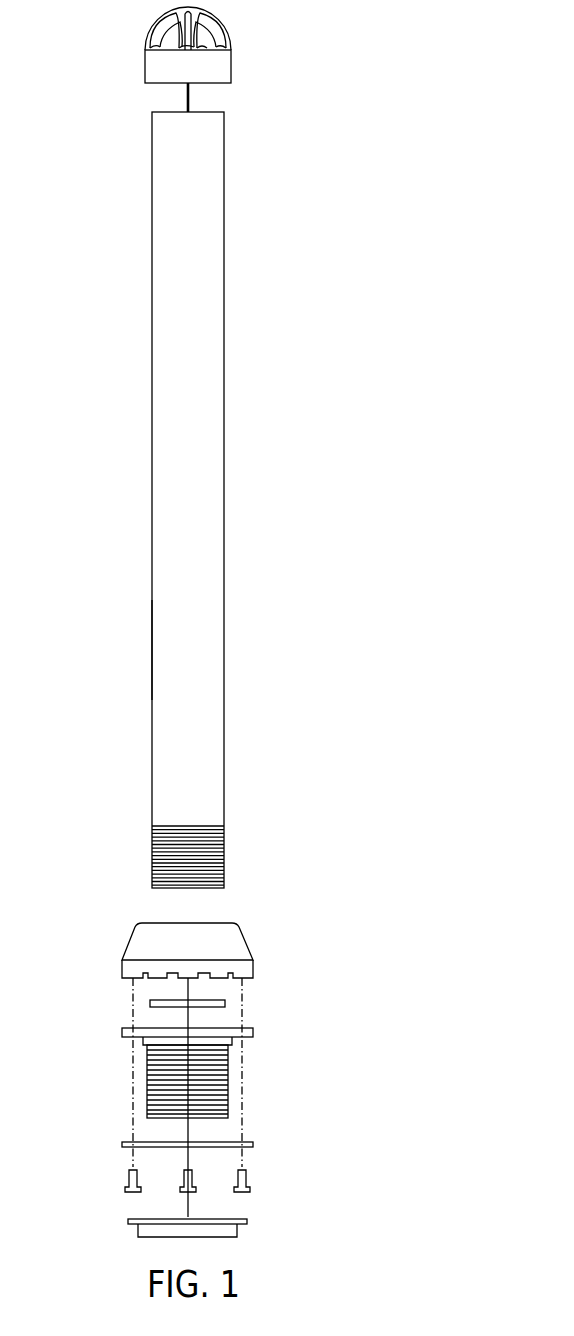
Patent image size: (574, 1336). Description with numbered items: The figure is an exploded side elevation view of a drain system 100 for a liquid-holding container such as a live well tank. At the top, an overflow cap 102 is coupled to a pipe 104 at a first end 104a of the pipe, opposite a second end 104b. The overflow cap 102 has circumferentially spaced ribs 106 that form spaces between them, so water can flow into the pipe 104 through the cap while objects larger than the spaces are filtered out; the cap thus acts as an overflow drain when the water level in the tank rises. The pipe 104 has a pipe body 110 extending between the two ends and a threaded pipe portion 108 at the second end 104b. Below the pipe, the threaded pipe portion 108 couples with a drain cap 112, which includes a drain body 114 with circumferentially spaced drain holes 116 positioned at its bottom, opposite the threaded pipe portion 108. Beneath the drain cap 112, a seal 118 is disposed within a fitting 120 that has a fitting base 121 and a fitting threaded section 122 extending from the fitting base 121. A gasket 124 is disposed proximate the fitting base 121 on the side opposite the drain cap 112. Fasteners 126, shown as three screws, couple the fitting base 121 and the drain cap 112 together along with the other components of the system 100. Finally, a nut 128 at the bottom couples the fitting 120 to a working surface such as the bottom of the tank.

The drain system 100 is at (381, 128).
The overflow cap 102 is at (135, 66).
The pipe 104 is at (232, 251).
The first end 104a is at (200, 112).
The second end 104b is at (178, 889).
The circumferentially spaced ribs 106 is at (205, 46).
The threaded pipe portion 108 is at (218, 855).
The pipe body 110 is at (218, 670).
The drain cap 112 is at (260, 944).
The drain body 114 is at (140, 950).
The drain holes 116 is at (125, 978).
The seal 118 is at (228, 1004).
The fitting 120 is at (265, 1031).
The fitting base 121 is at (122, 1032).
The fitting threaded section 122 is at (222, 1093).
The gasket 124 is at (250, 1143).
The fasteners 126 is at (250, 1182).
The nut 128 is at (248, 1220).